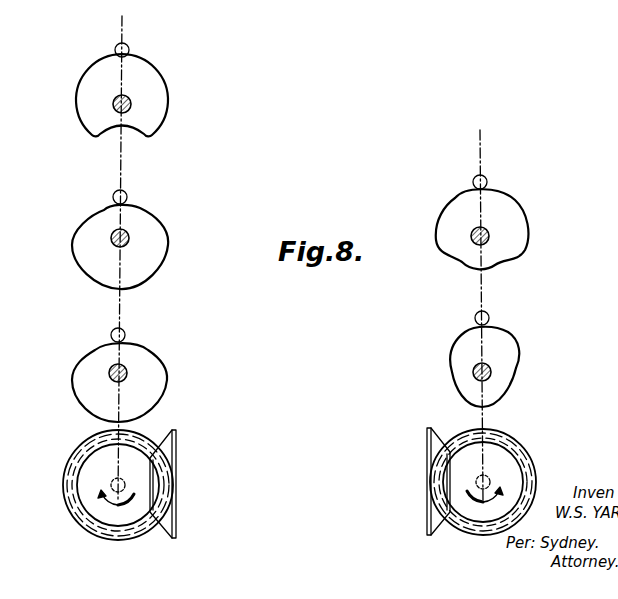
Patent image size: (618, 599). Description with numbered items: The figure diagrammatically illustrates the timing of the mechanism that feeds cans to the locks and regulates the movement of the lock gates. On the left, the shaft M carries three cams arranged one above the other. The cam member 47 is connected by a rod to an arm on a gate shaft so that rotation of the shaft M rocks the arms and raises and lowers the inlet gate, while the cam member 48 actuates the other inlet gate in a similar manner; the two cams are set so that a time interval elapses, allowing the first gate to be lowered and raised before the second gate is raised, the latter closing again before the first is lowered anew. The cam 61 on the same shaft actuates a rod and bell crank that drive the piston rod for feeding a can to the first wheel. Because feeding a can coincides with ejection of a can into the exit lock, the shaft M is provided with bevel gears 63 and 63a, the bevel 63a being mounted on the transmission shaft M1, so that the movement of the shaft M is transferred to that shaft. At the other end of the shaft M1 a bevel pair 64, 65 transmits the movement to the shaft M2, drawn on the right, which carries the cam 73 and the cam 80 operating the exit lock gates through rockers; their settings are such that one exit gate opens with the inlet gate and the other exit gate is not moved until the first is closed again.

The shaft M is at (122, 23).
The cam 61 is at (159, 103).
The cam member 47 is at (148, 222).
The cam member 48 is at (140, 368).
The bevel gear 63 is at (93, 455).
The bevel gear 63a is at (178, 450).
The transmission shaft M1 is at (178, 483).
The shaft M2 is at (480, 280).
The cam 73 is at (455, 207).
The cam 80 is at (460, 358).
The bevel gear 64 is at (425, 441).
The bevel gear 65 is at (510, 455).